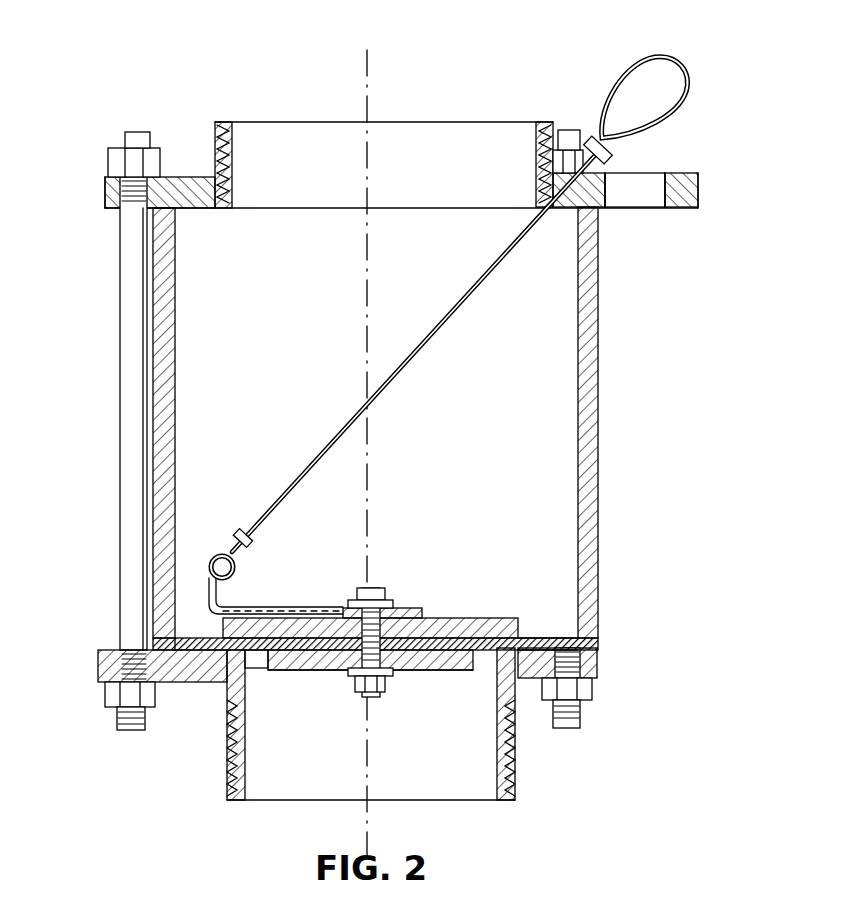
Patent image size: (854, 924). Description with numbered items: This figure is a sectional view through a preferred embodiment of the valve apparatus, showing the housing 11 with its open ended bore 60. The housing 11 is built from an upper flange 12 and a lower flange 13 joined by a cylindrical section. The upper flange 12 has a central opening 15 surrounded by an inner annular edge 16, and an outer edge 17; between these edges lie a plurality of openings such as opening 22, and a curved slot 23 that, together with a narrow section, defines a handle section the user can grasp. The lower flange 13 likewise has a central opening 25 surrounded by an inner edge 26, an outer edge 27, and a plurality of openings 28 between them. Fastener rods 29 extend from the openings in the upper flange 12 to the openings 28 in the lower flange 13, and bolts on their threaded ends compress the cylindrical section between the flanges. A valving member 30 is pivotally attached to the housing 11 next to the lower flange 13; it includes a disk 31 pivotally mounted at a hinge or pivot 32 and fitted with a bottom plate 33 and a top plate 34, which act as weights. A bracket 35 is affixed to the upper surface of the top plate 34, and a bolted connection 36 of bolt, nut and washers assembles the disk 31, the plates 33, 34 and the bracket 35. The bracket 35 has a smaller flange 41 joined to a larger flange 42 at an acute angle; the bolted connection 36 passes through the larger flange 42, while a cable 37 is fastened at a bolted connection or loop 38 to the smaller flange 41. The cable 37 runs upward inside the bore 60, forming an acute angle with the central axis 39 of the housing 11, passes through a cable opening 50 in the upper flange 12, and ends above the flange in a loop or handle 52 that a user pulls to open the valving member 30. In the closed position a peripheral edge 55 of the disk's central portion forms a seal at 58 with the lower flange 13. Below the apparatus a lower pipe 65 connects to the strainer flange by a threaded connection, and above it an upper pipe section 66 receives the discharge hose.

The housing 11 is at (600, 425).
The upper flange 12 is at (702, 165).
The lower flange 13 is at (605, 655).
The central opening 15 is at (290, 212).
The inner annular edge 16 is at (232, 212).
The outer edge 17 is at (103, 192).
The opening 22 is at (122, 212).
The curved slot 23 is at (640, 210).
The central opening 25 is at (365, 672).
The inner edge 26 is at (250, 660).
The outer edge 27 is at (110, 665).
The openings 28 is at (165, 682).
The rods 29 is at (145, 515).
The valving member 30 is at (445, 617).
The disk 31 is at (540, 640).
The hinge or pivot 32 is at (600, 640).
The bottom plate 33 is at (312, 670).
The top plate 34 is at (500, 615).
The bracket 35 is at (305, 605).
The bolted connection 36 is at (362, 592).
The cable 37 is at (392, 368).
The bolted connection or loop 38 is at (220, 555).
The central axis 39 is at (373, 292).
The smaller flange 41 is at (240, 595).
The larger flange 42 is at (410, 607).
The cable opening 50 is at (606, 160).
The loop or handle 52 is at (657, 55).
The peripheral edge 55 is at (180, 665).
The seal 58 is at (232, 720).
The open ended bore 60 is at (467, 228).
The lower pipe 65 is at (232, 800).
The upper pipe section 66 is at (232, 125).